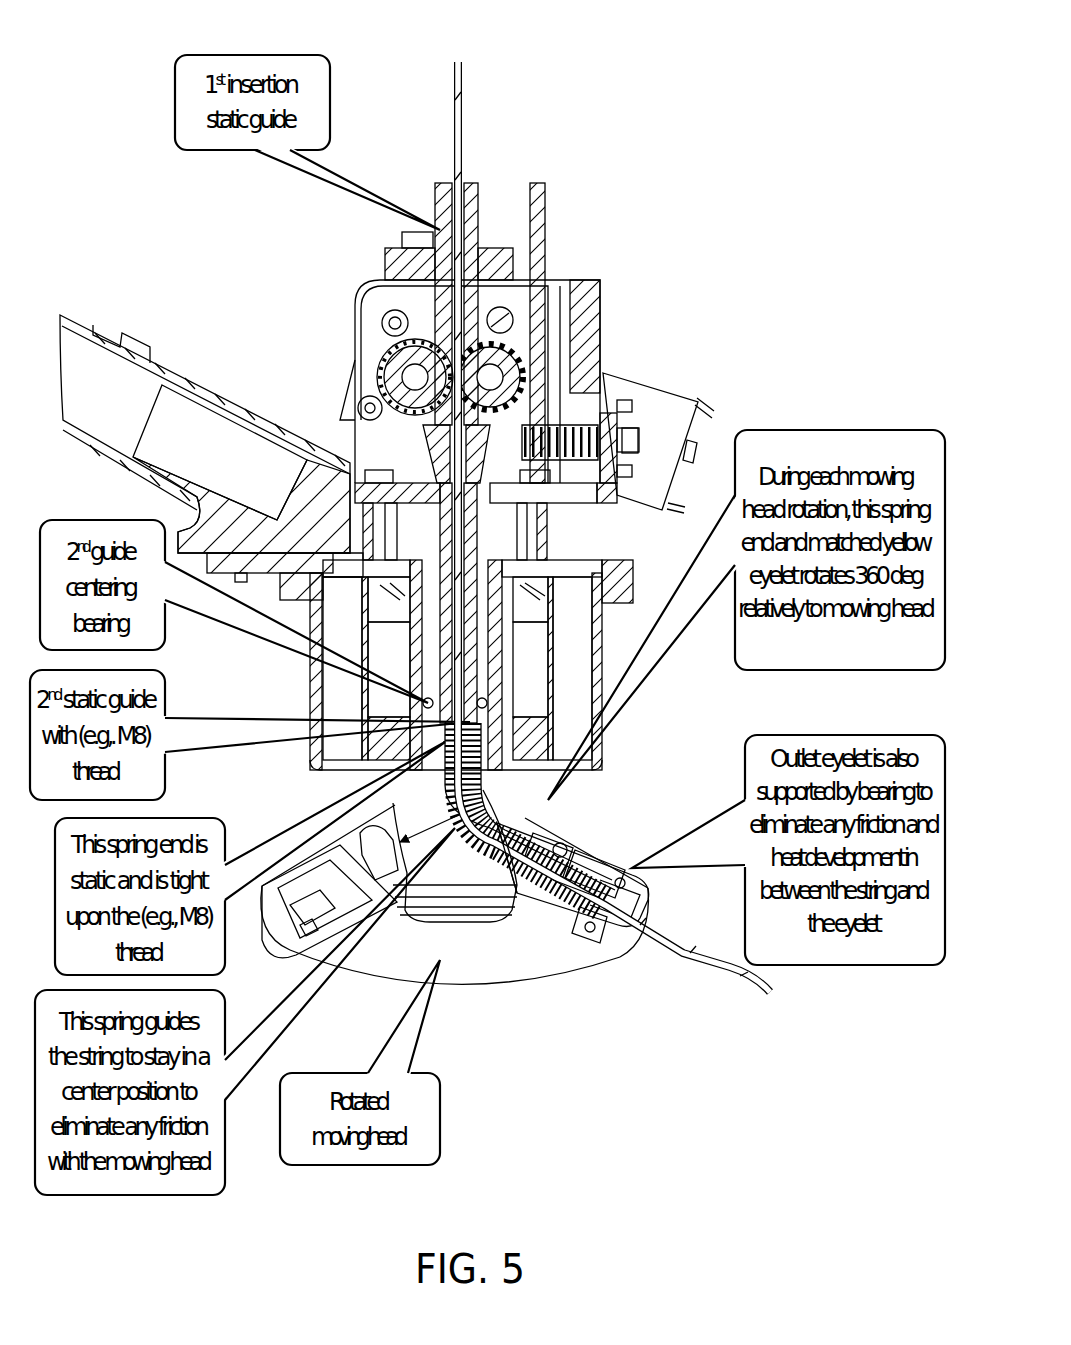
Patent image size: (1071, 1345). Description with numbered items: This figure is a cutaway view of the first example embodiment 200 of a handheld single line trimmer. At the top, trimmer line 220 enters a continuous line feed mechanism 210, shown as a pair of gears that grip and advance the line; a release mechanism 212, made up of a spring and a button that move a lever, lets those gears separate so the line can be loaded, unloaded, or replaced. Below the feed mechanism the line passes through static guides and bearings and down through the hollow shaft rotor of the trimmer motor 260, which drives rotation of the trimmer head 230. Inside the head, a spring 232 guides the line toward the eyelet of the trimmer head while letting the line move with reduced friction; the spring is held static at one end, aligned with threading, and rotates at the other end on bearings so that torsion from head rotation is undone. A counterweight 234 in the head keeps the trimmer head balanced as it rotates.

The first example embodiment 200 is at (760, 83).
The continuous line feed mechanism 210 is at (598, 372).
The release mechanism 212 is at (643, 437).
The trimmer line 220 is at (461, 88).
The trimmer head 230 is at (467, 988).
The spring 232 is at (483, 790).
The counterweight 234 is at (365, 833).
The trimmer motor 260 is at (515, 698).